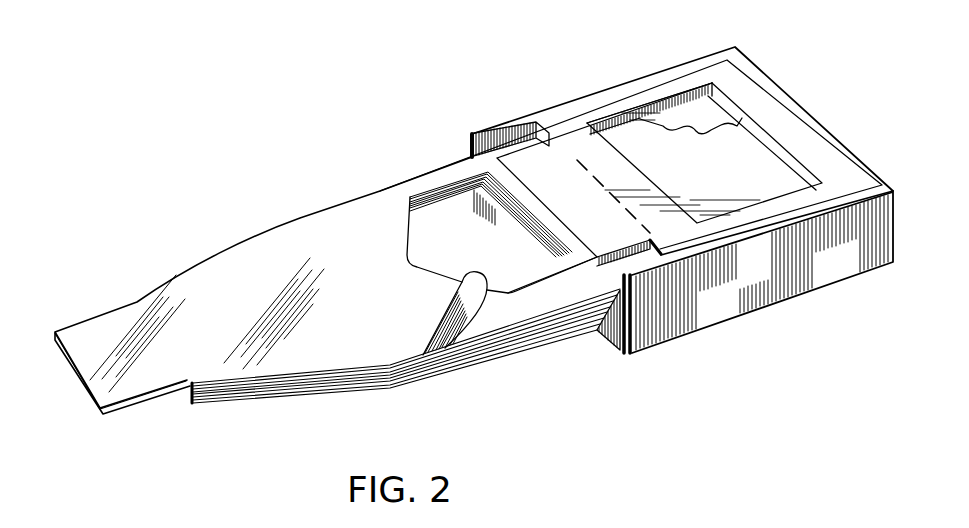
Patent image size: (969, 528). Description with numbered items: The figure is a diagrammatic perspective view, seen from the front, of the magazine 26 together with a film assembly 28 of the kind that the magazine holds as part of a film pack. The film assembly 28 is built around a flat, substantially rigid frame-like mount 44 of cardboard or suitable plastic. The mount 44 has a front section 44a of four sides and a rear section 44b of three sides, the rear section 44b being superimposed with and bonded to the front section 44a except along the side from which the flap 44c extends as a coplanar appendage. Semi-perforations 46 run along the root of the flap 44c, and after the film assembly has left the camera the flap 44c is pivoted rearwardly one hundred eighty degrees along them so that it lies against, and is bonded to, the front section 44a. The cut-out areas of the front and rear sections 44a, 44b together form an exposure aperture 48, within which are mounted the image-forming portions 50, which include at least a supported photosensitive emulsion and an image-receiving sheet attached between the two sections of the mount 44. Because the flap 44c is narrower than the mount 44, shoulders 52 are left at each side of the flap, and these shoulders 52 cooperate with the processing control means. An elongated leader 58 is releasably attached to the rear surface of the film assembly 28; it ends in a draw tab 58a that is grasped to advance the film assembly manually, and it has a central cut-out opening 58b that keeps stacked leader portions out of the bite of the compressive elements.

The magazine 26 is at (752, 322).
The film assembly 28 is at (428, 161).
The mount 44 is at (818, 134).
The front section 44a is at (745, 88).
The rear section 44b is at (735, 110).
The flap 44c is at (528, 140).
The semi-perforations 46 is at (563, 153).
The exposure aperture 48 is at (658, 116).
The image-forming portions 50 is at (722, 170).
The shoulders 52 is at (527, 163).
The leader 58 is at (277, 230).
The draw tab 58a is at (133, 403).
The cut-out opening 58b is at (447, 350).